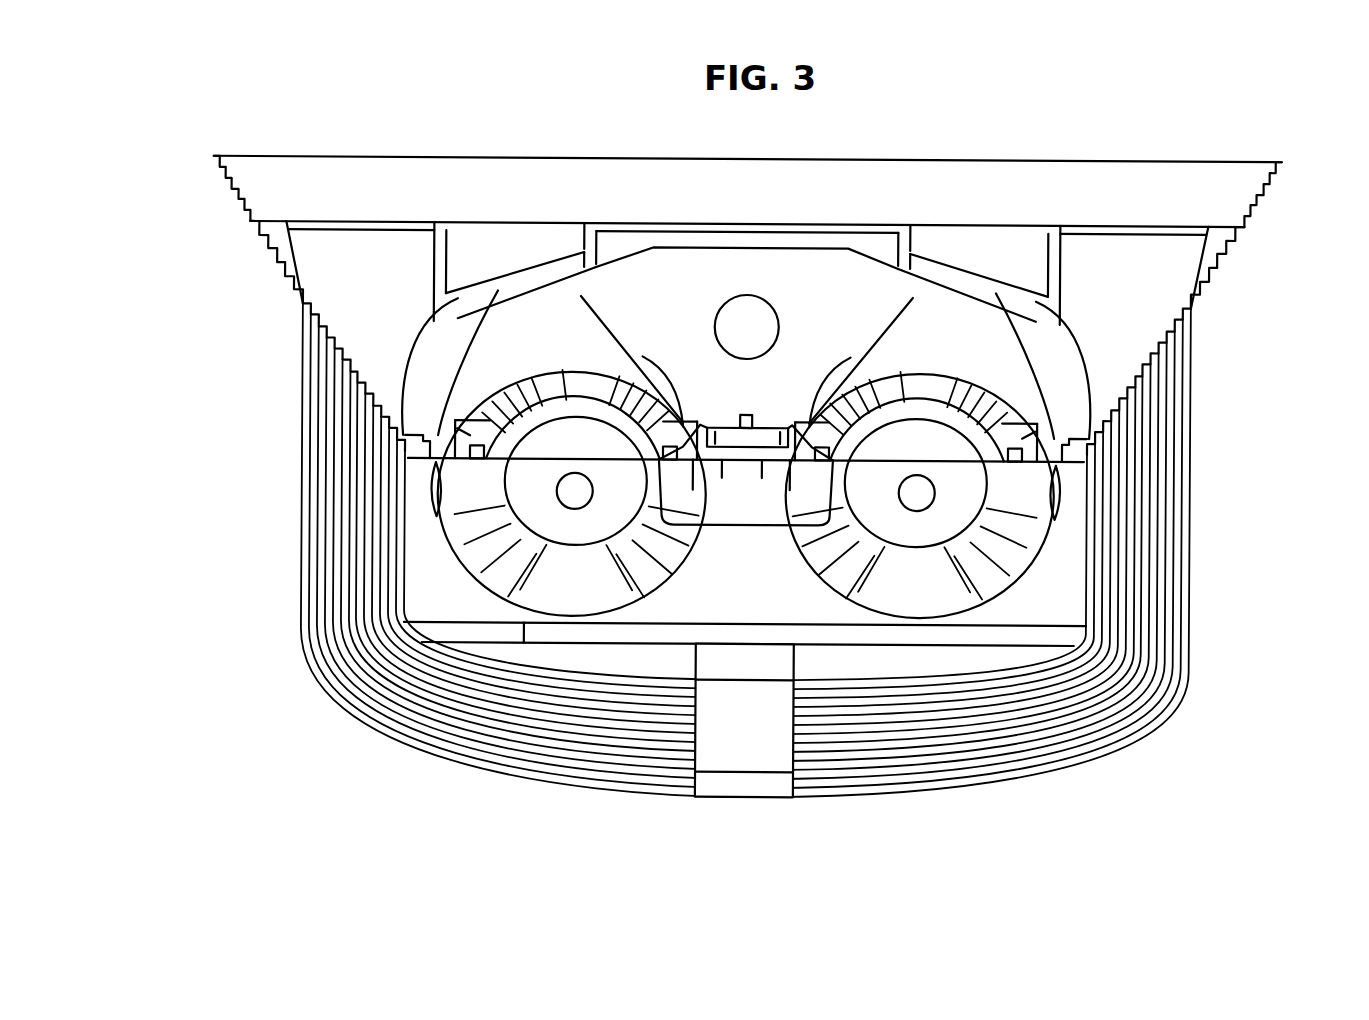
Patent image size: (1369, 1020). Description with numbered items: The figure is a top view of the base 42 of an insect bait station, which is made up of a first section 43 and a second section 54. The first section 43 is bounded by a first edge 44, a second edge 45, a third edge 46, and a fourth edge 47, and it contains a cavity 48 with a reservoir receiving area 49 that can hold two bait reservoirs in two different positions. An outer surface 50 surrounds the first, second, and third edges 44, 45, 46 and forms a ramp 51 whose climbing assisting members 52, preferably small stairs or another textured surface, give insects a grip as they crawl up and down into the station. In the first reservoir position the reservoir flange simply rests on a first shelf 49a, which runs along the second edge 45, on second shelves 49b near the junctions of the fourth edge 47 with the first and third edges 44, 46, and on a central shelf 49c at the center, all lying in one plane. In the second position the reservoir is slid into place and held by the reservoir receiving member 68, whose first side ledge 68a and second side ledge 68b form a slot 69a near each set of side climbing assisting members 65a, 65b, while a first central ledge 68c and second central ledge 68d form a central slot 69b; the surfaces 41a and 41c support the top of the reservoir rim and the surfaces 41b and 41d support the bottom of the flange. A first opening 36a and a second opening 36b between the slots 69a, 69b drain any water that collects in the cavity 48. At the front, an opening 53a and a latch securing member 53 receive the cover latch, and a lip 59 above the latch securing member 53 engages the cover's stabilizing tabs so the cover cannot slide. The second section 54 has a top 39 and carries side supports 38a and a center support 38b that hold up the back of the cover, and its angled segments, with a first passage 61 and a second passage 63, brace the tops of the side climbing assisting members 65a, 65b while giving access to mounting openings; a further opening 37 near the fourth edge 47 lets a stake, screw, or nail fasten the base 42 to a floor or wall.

The first opening 36a is at (560, 505).
The second opening 36b is at (920, 510).
The opening 37 is at (762, 305).
The side supports 38a is at (382, 280).
The center support 38b is at (822, 243).
The top 39 is at (463, 180).
The surface 41a is at (493, 449).
The surface 41b is at (743, 512).
The surface 41c is at (663, 447).
The surface 41d is at (746, 492).
The base 42 is at (1173, 104).
The first section 43 is at (1207, 524).
The first edge 44 is at (400, 571).
The second edge 45 is at (526, 645).
The third edge 46 is at (1087, 616).
The fourth edge 47 is at (684, 250).
The cavity 48 is at (500, 362).
The reservoir receiving area 49 is at (513, 503).
The first shelf 49a is at (722, 603).
The second shelf 49b is at (447, 340).
The central shelf 49c is at (760, 425).
The outer surface 50 is at (886, 778).
The ramp 51 is at (958, 740).
The climbing assisting members 52 is at (1033, 745).
The latch securing member 53 is at (740, 690).
The opening 53a is at (700, 662).
The second section 54 is at (1270, 214).
The lip 59 is at (768, 798).
The first passage 61 is at (531, 232).
The second passage 63 is at (1003, 232).
The first set of side climbing assisting members 65a is at (241, 214).
The second set of side climbing assisting members 65b is at (1236, 262).
The reservoir receiving member 68 is at (650, 366).
The first side ledge 68a is at (525, 470).
The second side ledge 68b is at (430, 426).
The first central ledge 68c is at (660, 466).
The second central ledge 68d is at (725, 425).
The slot 69a is at (471, 433).
The slot 69b is at (744, 492).